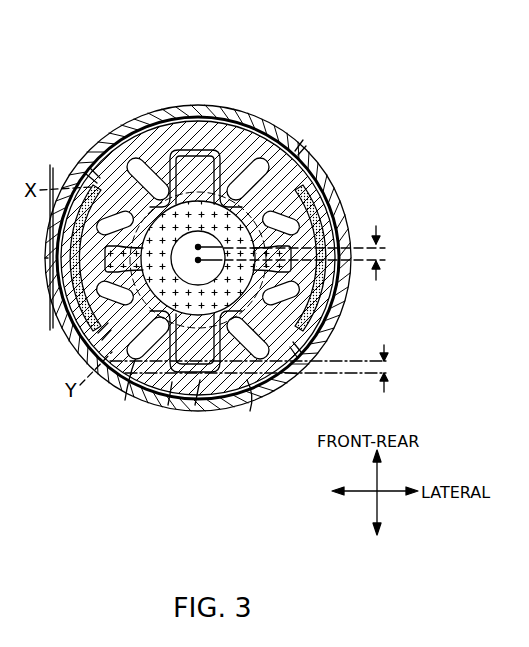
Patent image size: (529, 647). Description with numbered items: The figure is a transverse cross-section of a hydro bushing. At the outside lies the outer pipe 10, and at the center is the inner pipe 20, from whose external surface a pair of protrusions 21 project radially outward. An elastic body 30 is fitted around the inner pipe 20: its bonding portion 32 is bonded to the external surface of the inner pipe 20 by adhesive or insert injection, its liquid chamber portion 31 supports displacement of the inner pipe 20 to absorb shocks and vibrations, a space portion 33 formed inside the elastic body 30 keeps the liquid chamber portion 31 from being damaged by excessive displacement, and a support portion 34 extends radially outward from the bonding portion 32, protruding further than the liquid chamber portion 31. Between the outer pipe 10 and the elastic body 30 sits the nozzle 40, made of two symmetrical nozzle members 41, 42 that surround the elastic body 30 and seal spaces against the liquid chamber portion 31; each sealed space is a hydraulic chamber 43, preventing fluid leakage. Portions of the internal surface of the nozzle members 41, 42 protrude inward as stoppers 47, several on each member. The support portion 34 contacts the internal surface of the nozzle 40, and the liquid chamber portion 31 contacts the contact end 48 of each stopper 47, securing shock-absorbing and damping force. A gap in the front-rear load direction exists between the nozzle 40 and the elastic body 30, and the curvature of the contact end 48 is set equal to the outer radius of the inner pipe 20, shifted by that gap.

The outer pipe 10 is at (303, 140).
The inner pipe 20 is at (318, 341).
The protrusions 21 is at (108, 262).
The elastic body 30 is at (198, 258).
The liquid chamber portion 31 is at (130, 400).
The bonding portion 32 is at (170, 405).
The space portion 33 is at (62, 296).
The support portion 34 is at (195, 405).
The nozzle 40 is at (203, 72).
The nozzle member 41 is at (203, 127).
The nozzle member 42 is at (249, 405).
The hydraulic chamber 43 is at (112, 190).
The stopper 47 is at (155, 196).
The contact end 48 is at (250, 188).